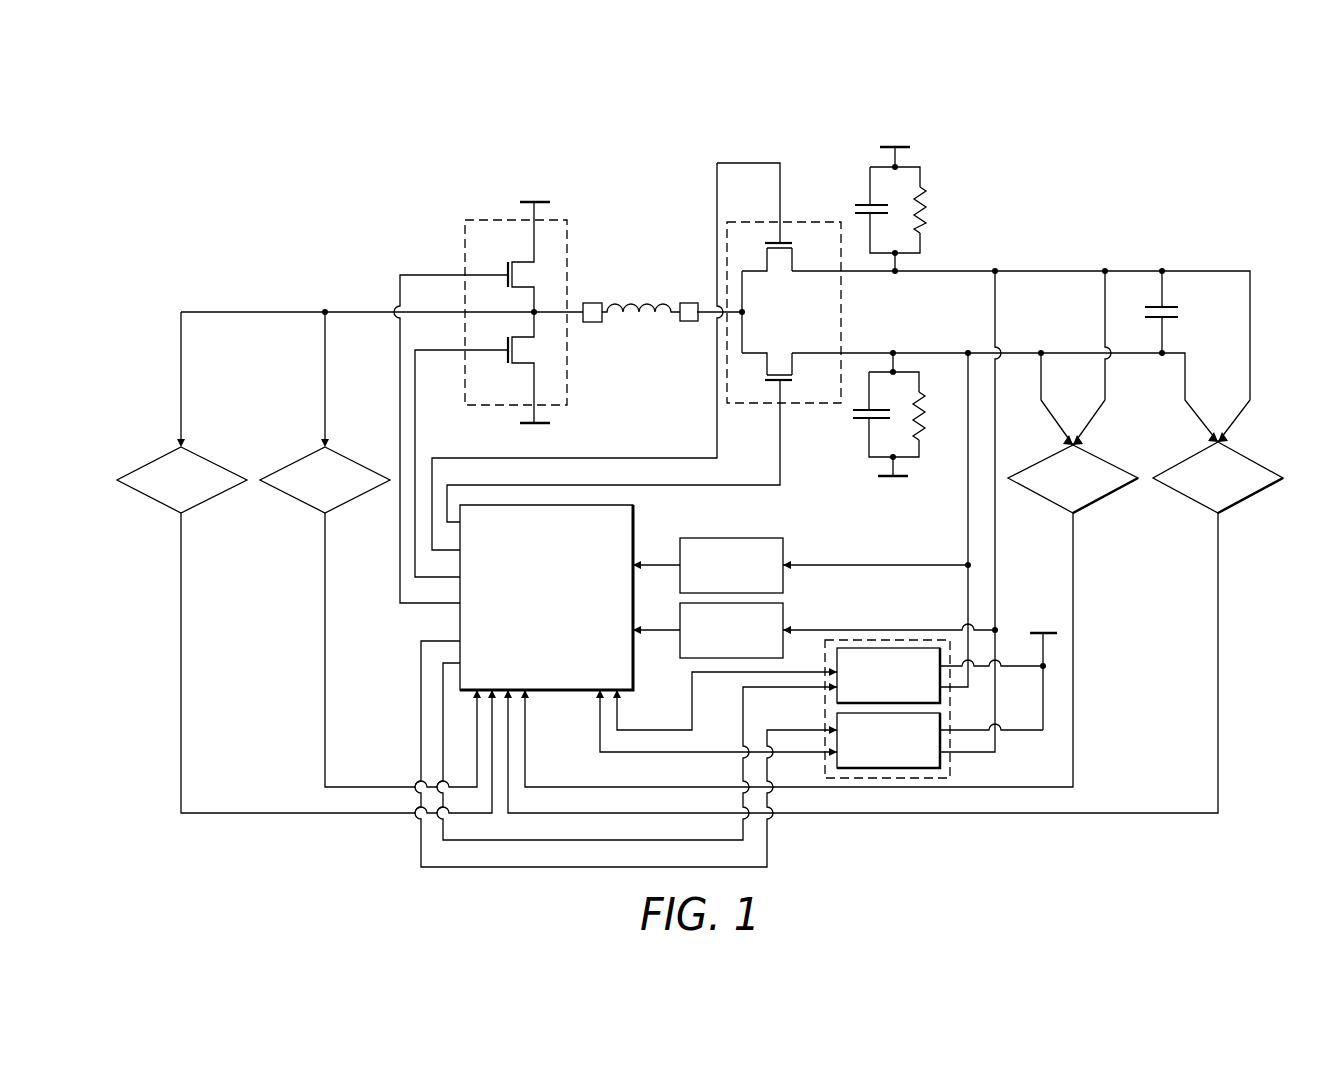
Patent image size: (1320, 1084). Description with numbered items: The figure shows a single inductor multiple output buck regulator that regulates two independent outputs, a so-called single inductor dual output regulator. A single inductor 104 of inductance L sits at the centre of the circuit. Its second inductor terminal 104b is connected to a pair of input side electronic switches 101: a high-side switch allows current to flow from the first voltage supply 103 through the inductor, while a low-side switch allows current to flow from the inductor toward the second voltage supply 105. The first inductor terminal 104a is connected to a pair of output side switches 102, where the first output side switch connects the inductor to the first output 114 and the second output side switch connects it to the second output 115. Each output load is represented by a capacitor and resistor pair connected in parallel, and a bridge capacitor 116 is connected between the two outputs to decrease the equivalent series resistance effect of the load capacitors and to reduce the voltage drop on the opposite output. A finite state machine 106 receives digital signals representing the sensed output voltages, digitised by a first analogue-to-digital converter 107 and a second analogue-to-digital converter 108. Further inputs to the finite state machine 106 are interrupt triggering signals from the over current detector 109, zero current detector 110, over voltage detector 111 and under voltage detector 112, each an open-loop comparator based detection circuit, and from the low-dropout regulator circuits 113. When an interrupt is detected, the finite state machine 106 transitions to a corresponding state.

The input side electronic switches 101 is at (465, 240).
The output side switches 102 is at (780, 405).
The voltage supply VDD 103 is at (532, 174).
The inductor 104 is at (645, 300).
The first inductor terminal 104a is at (690, 322).
The second inductor terminal 104b is at (592, 323).
The voltage supply VSS 105 is at (555, 423).
The finite state machine 106 is at (635, 516).
The analogue-to-digital converter ADC1 107 is at (785, 614).
The analogue-to-digital converter ADC2 108 is at (785, 549).
The over current detector 109 is at (152, 462).
The zero current detector 110 is at (290, 462).
The over voltage detector 111 is at (1105, 500).
The under voltage detector 112 is at (1250, 500).
The low-dropout regulator circuits 113 is at (952, 766).
The first output 114 is at (922, 233).
The second output 115 is at (915, 353).
The bridge capacitor 116 is at (1168, 300).